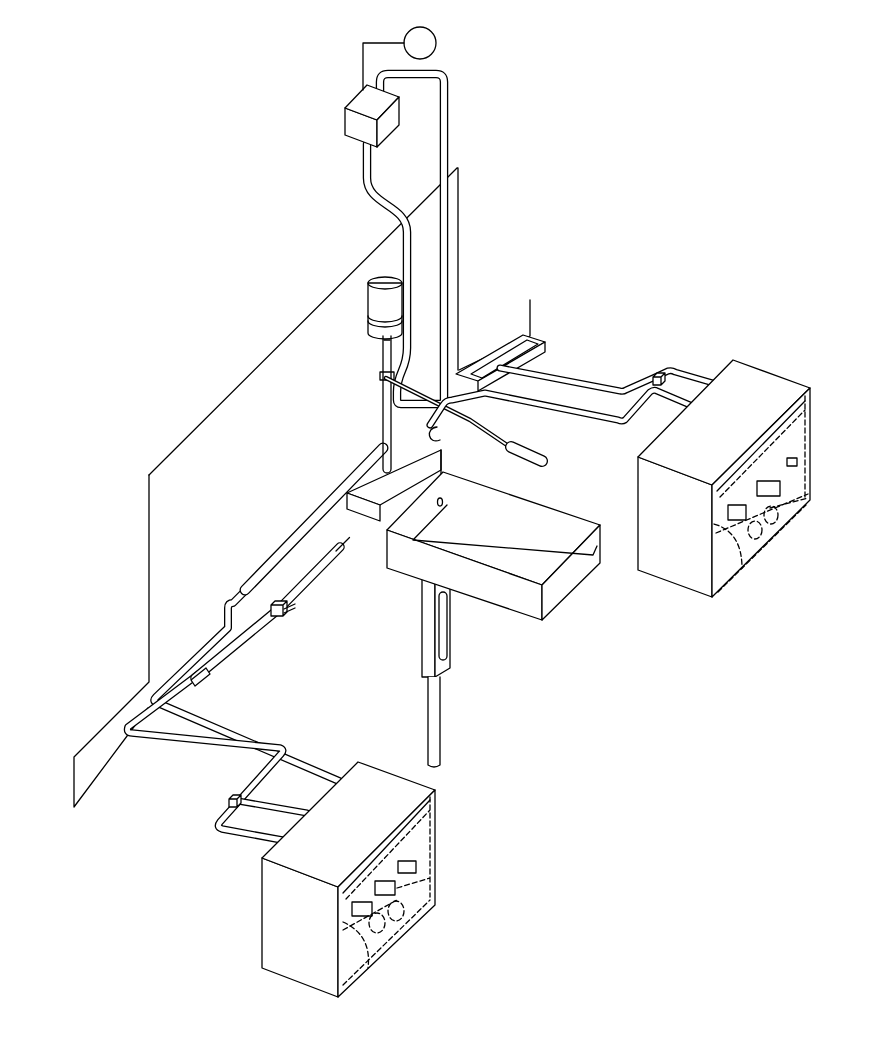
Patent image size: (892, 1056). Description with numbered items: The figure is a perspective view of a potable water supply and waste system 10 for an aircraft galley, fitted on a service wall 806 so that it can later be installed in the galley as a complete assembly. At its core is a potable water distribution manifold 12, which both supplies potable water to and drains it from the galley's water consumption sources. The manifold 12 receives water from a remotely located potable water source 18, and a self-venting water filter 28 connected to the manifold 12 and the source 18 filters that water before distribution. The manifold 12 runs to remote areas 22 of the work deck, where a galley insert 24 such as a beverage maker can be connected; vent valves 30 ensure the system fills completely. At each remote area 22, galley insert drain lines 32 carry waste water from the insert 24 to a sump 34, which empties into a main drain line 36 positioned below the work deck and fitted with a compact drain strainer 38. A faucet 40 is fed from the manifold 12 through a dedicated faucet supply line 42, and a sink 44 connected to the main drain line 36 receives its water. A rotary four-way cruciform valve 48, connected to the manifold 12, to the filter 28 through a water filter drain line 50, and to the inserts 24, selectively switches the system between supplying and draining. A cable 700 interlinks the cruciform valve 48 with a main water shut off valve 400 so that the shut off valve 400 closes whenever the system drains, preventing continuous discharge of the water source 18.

The potable water supply and waste system 10 is at (190, 304).
The potable water distribution manifold 12 is at (380, 418).
The potable water source 18 is at (428, 42).
The remote area 22 is at (725, 461).
The galley insert 24 is at (728, 583).
The water filter 28 is at (385, 283).
The vent valve 30 is at (657, 373).
The galley insert drain line 32 is at (600, 385).
The sump 34 is at (498, 378).
The main drain line 36 is at (437, 706).
The compact drain strainer 38 is at (442, 616).
The faucet 40 is at (532, 444).
The faucet supply line 42 is at (417, 396).
The sink 44 is at (546, 604).
The cruciform valve 48 is at (434, 428).
The water filter drain line 50 is at (386, 446).
The main water shut off valve 400 is at (383, 128).
The cable 700 is at (447, 128).
The service wall 806 is at (149, 617).